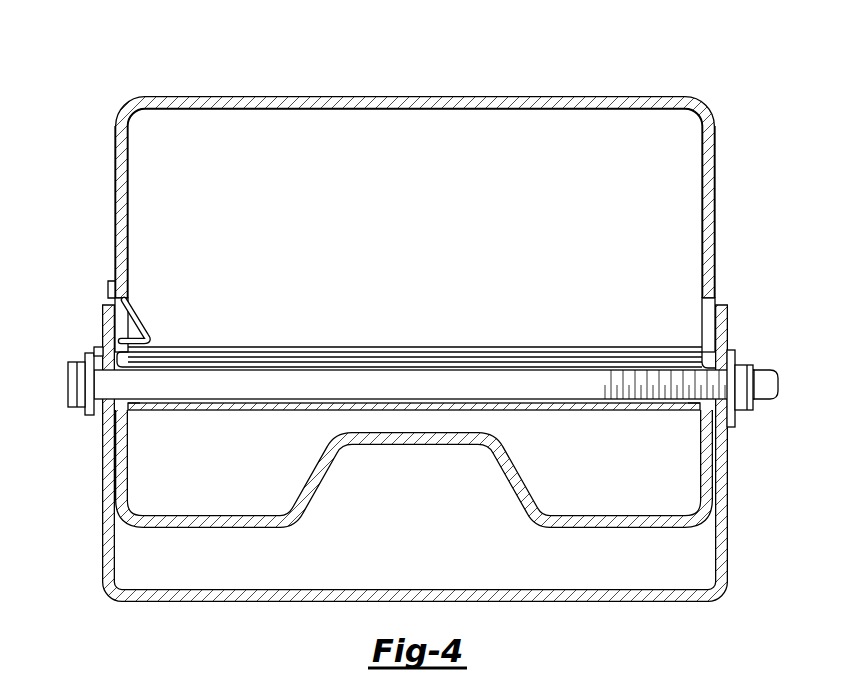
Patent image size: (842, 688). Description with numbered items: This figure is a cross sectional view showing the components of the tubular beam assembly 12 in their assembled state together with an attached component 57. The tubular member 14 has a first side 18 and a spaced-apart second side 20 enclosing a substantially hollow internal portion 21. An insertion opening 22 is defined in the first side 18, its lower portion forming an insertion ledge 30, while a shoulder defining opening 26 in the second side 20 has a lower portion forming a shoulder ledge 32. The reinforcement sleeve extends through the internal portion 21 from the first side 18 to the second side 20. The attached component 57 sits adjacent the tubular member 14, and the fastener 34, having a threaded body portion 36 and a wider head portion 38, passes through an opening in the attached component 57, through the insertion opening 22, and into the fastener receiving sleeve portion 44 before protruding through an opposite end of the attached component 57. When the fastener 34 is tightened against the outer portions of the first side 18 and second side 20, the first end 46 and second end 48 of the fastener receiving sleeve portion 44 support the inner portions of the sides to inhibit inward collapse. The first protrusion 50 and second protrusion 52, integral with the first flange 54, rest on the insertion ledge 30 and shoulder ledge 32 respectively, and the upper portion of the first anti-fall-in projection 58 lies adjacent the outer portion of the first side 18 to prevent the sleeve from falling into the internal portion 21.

The tubular beam assembly 12 is at (641, 75).
The tubular member 14 is at (312, 96).
The first side 18 is at (116, 180).
The second side 20 is at (716, 133).
The internal portion 21 is at (502, 133).
The insertion opening 22 is at (121, 330).
The shoulder defining opening 26 is at (708, 295).
The insertion ledge 30 is at (85, 369).
The shoulder ledge 32 is at (729, 366).
The fastener 34 is at (273, 392).
The body portion 36 is at (483, 386).
The head portion 38 is at (77, 385).
The fastener receiving sleeve portion 44 is at (222, 411).
The first end 46 is at (135, 403).
The second end 48 is at (688, 405).
The first protrusion 50 is at (98, 347).
The second protrusion 52 is at (716, 351).
The first flange 54 is at (372, 348).
The attached component 57 is at (103, 541).
The first anti-fall-in projection 58 is at (109, 283).